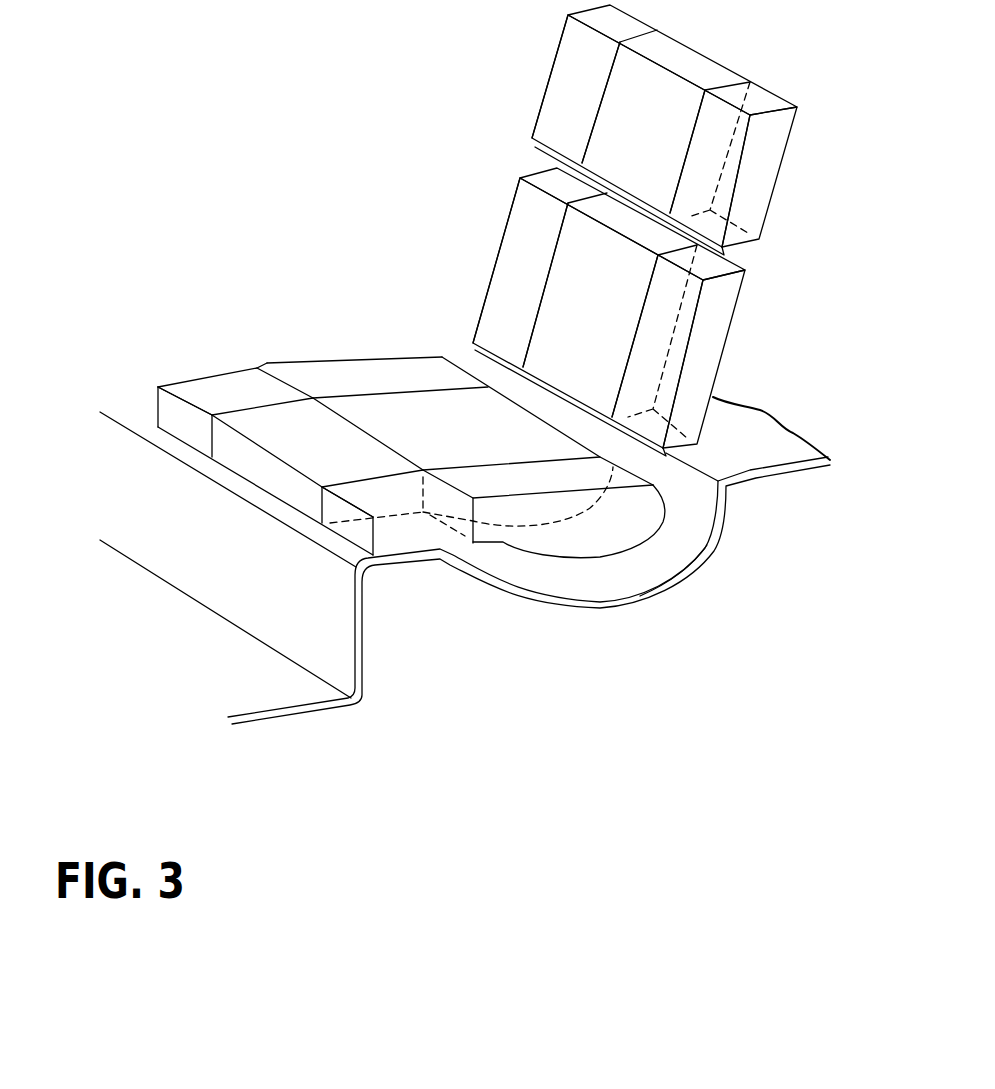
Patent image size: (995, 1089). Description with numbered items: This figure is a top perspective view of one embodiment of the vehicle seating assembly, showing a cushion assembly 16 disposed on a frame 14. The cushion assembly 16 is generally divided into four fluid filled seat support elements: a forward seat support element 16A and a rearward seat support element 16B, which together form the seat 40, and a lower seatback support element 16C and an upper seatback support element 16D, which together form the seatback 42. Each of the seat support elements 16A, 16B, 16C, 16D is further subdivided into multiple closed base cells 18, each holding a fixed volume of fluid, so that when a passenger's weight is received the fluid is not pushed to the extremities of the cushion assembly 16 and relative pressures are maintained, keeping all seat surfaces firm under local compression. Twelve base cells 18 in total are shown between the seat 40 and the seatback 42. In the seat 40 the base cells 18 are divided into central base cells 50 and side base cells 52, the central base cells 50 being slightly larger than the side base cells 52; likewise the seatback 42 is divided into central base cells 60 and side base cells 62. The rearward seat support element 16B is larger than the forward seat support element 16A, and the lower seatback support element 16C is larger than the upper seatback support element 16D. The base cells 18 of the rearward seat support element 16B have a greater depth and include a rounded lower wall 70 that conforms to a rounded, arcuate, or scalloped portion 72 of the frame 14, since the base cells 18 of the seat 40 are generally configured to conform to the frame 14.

The frame 14 is at (763, 481).
The cushion assembly 16 is at (403, 288).
The forward seat support element 16A is at (177, 378).
The rearward seat support element 16B is at (298, 362).
The lower seatback support element 16C is at (487, 288).
The upper seatback support element 16D is at (545, 90).
The base cells 18 is at (142, 393).
The seat 40 is at (253, 367).
The seatback 42 is at (500, 243).
The central base cells 50 is at (306, 456).
The side base cells 52 is at (230, 404).
The central base cells 60 is at (638, 146).
The side base cells 62 is at (565, 111).
The rounded lower wall 70 is at (627, 553).
The scalloped portion 72 is at (677, 575).